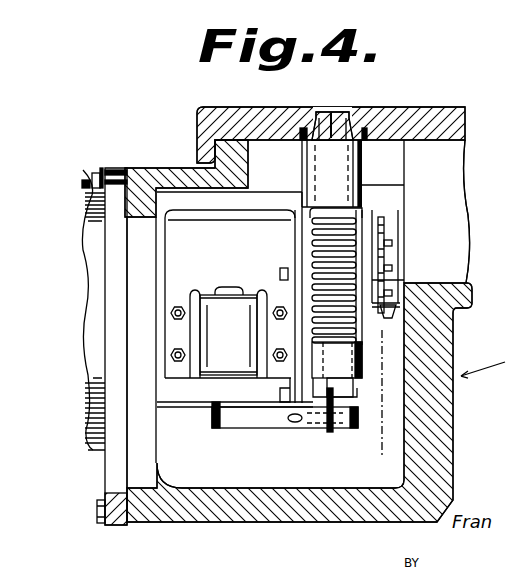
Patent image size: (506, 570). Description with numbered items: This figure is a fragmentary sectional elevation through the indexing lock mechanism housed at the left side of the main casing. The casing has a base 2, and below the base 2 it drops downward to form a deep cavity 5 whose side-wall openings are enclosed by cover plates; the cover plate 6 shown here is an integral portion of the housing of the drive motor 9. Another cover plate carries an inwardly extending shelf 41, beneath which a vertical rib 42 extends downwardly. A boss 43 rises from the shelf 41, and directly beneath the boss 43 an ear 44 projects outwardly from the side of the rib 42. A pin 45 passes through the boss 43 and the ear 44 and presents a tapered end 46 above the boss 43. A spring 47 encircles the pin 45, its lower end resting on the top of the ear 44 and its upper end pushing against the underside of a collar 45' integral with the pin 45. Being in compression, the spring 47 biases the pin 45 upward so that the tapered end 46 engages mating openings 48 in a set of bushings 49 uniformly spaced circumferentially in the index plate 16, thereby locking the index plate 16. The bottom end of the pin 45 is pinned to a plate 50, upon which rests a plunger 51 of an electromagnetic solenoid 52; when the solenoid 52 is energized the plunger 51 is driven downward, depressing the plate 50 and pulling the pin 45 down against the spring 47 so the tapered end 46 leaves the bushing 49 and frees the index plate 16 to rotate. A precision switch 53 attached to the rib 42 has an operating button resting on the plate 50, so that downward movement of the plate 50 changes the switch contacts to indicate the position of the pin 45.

The base 2 is at (473, 294).
The deep cavity 5 is at (228, 472).
The cover plate 6 is at (121, 464).
The drive motor 9 is at (88, 410).
The index plate 16 is at (448, 105).
The shelf 41 is at (270, 188).
The vertical rib 42 is at (303, 232).
The boss 43 is at (338, 165).
The ear 44 is at (346, 359).
The pin 45 is at (321, 422).
The collar 45' is at (411, 252).
The tapered end 46 is at (328, 133).
The spring 47 is at (352, 240).
The openings 48 is at (336, 116).
The bushings 49 is at (337, 107).
The plate 50 is at (257, 420).
The plunger 51 is at (207, 410).
The electromagnetic solenoid 52 is at (178, 245).
The precision switch 53 is at (357, 398).